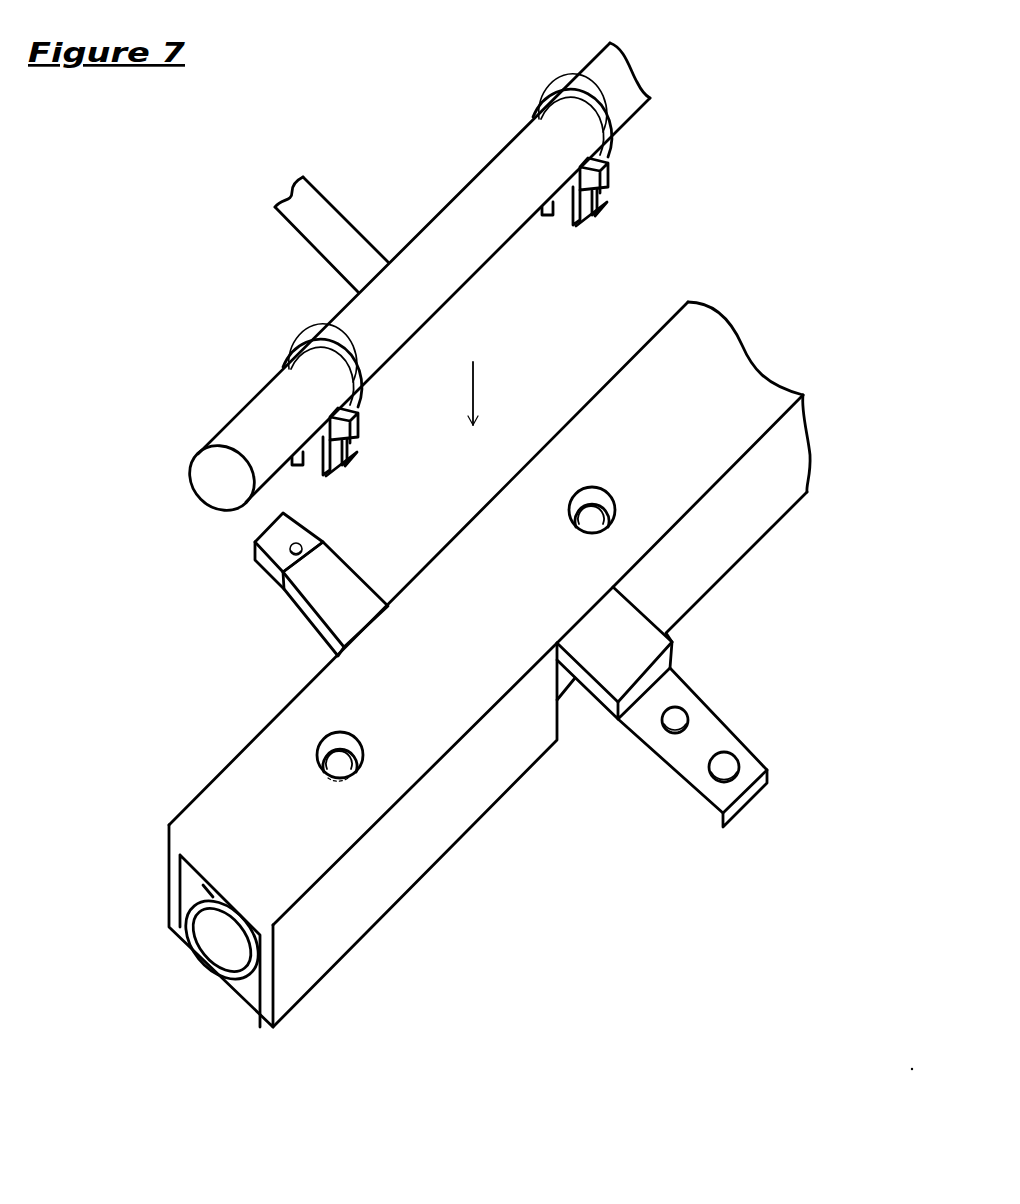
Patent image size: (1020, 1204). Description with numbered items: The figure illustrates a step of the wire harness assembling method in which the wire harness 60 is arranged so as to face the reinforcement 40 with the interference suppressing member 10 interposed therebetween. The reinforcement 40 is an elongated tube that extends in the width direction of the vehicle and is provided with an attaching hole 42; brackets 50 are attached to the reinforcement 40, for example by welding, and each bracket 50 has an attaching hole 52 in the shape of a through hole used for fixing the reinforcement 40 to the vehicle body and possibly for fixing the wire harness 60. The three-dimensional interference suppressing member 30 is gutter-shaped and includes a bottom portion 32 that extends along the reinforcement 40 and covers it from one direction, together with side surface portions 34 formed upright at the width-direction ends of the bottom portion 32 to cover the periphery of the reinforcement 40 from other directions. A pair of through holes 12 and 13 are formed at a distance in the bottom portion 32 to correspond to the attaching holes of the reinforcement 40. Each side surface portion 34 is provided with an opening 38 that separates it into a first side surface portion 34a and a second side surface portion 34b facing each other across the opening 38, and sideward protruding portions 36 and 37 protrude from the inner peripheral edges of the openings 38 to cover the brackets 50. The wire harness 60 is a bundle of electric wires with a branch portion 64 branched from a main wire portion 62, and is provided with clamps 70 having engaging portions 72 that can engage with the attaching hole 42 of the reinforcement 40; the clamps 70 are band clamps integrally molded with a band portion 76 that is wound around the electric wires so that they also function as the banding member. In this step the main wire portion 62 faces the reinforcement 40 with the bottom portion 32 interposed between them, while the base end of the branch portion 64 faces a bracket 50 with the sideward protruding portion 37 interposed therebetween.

The interference suppressing member 10 is at (473, 678).
The through hole 12 is at (337, 745).
The through hole 13 is at (588, 503).
The three-dimensional interference suppressing member 30 is at (473, 678).
The bottom portion 32 is at (215, 810).
The side surface portion 34 is at (473, 664).
The first side surface portion 34a is at (392, 963).
The second side surface portion 34b is at (755, 528).
The sideward protruding portion 36 is at (660, 652).
The sideward protruding portion 37 is at (348, 582).
The opening 38 is at (578, 712).
The reinforcement 40 is at (233, 985).
The attaching hole 42 is at (345, 762).
The bracket 50 is at (266, 568).
The attaching hole 52 is at (690, 714).
The wire harness 60 is at (413, 283).
The main wire portion 62 is at (462, 262).
The branch portion 64 is at (324, 240).
The clamp 70 is at (360, 420).
The engaging portion 72 is at (352, 456).
The band portion 76 is at (346, 370).